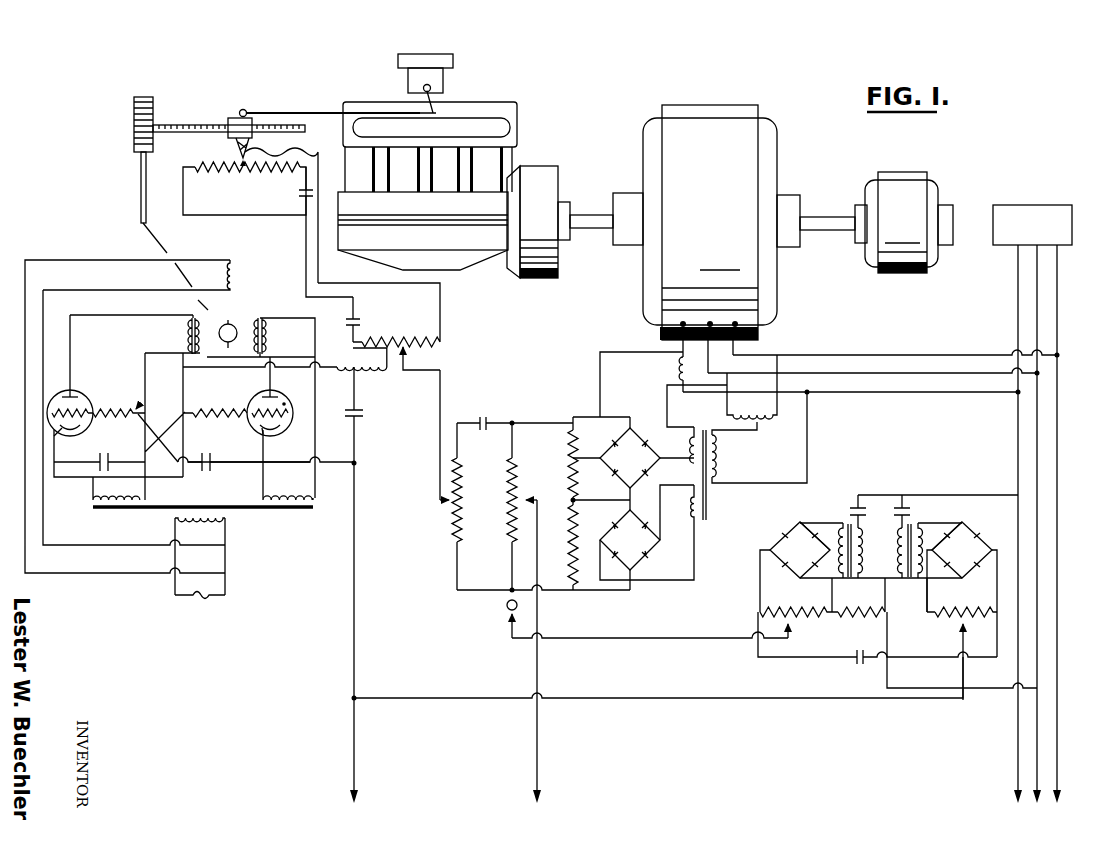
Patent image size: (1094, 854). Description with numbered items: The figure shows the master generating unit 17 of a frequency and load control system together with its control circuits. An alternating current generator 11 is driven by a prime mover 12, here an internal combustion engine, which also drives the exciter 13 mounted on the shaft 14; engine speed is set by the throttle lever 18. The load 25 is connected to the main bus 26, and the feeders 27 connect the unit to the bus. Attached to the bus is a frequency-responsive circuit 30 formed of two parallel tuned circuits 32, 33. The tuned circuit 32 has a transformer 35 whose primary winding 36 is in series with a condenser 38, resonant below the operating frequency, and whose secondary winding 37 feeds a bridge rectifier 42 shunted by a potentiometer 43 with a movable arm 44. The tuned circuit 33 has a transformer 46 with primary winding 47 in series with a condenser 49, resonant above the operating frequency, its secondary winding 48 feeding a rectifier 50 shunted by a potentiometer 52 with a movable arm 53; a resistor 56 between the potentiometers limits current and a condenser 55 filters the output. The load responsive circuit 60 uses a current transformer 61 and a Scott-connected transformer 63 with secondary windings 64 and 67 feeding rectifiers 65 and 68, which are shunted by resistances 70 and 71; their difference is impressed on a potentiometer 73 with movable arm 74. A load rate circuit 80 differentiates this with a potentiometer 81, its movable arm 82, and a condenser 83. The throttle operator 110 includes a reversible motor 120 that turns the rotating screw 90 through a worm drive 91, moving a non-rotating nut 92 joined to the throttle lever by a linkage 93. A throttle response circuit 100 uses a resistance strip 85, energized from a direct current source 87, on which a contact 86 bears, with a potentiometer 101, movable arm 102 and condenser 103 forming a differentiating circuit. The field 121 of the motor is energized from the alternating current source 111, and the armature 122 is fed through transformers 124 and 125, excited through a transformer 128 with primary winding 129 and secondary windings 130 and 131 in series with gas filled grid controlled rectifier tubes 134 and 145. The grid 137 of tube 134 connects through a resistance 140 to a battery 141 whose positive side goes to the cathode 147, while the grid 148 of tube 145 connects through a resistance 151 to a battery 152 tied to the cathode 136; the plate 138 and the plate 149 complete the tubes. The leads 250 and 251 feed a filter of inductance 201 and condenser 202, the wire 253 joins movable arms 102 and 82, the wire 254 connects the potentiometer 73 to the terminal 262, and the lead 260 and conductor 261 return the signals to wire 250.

The alternating current generator 11 is at (778, 143).
The prime mover 12 is at (518, 133).
The exciter 13 is at (922, 172).
The shaft 14 is at (590, 215).
The generating unit 17 is at (571, 151).
The throttle lever 18 is at (440, 96).
The load 25 is at (1042, 205).
The main bus 26 is at (1059, 477).
The feeders 27 is at (857, 358).
The frequency-responsive circuit 30 is at (900, 473).
The tuned circuit 32 is at (815, 527).
The tuned circuit 33 is at (950, 530).
The transformer 35 is at (833, 605).
The primary winding 36 is at (884, 551).
The secondary winding 37 is at (842, 522).
The condenser 38 is at (856, 505).
The rectifier 42 is at (795, 567).
The variable potentiometer 43 is at (801, 606).
The movable arm 44 is at (790, 630).
The transformer 46 is at (924, 606).
The primary winding 47 is at (898, 540).
The secondary winding 48 is at (919, 540).
The condenser 49 is at (910, 511).
The rectifier 50 is at (962, 589).
The potentiometer 52 is at (943, 606).
The movable arm 53 is at (960, 626).
The condenser 55 is at (860, 650).
The resistor 56 is at (863, 606).
The load responsive circuit 60 is at (582, 397).
The current transformer 61 is at (680, 375).
The Scott-connected transformer 63 is at (760, 428).
The secondary winding 64 is at (692, 450).
The rectifier 65 is at (616, 463).
The secondary winding 67 is at (691, 513).
The rectifier 68 is at (630, 550).
The resistance 70 is at (578, 440).
The resistance 71 is at (579, 530).
The potentiometer 73 is at (518, 471).
The movable arm 74 is at (535, 496).
The load rate circuit 80 is at (440, 560).
The potentiometer 81 is at (462, 515).
The movable arm 82 is at (437, 503).
The condenser 83 is at (485, 418).
The resistance strip 85 is at (240, 172).
The contact 86 is at (238, 163).
The source of direct current 87 is at (299, 196).
The rotating screw 90 is at (200, 124).
The worm drive 91 is at (133, 124).
The non-rotating nut 92 is at (239, 111).
The linkage 93 is at (312, 112).
The throttle response circuit 100 is at (425, 308).
The potentiometer 101 is at (412, 337).
The movable arm 102 is at (414, 362).
The condenser 103 is at (362, 322).
The throttle operator 110 is at (126, 245).
The source of alternating current 111 is at (211, 597).
The reversible motor 120 is at (258, 308).
The field 121 is at (237, 276).
The armature 122 is at (227, 351).
The transformer 124 is at (266, 316).
The transformer 125 is at (190, 316).
The transformer 128 is at (252, 511).
The primary winding 129 is at (185, 526).
The secondary winding 130 is at (314, 502).
The secondary winding 131 is at (92, 502).
The gas filled grid controlled rectifier tube 134 is at (280, 396).
The cathode 136 is at (256, 428).
The grid 137 is at (288, 428).
The plate 138 is at (262, 396).
The resistance 140 is at (195, 416).
The battery 141 is at (113, 450).
The gas filled grid controlled rectifier tube 145 is at (60, 393).
The cathode 147 is at (63, 431).
The grid 148 is at (110, 417).
The plate 149 is at (80, 395).
The resistance 151 is at (135, 404).
The battery 152 is at (201, 466).
The center tapped inductance 201 is at (370, 371).
The condenser 202 is at (362, 419).
The lead 250 is at (352, 456).
The lead 251 is at (342, 369).
The wire 253 is at (442, 403).
The wire 254 is at (648, 639).
The lead 260 is at (357, 756).
The conductor 261 is at (540, 693).
The terminal 262 is at (506, 611).